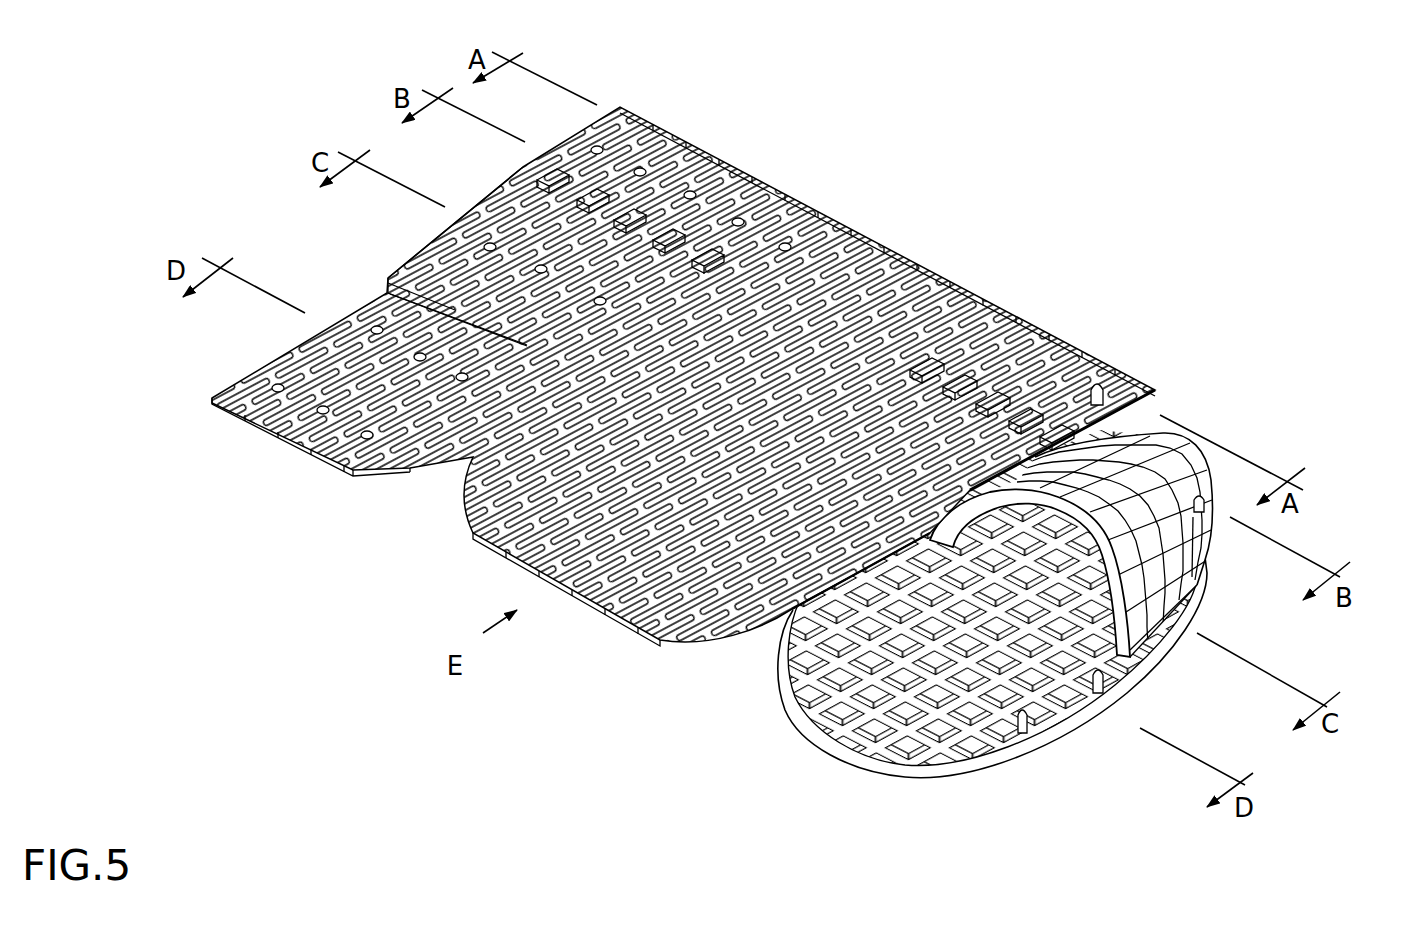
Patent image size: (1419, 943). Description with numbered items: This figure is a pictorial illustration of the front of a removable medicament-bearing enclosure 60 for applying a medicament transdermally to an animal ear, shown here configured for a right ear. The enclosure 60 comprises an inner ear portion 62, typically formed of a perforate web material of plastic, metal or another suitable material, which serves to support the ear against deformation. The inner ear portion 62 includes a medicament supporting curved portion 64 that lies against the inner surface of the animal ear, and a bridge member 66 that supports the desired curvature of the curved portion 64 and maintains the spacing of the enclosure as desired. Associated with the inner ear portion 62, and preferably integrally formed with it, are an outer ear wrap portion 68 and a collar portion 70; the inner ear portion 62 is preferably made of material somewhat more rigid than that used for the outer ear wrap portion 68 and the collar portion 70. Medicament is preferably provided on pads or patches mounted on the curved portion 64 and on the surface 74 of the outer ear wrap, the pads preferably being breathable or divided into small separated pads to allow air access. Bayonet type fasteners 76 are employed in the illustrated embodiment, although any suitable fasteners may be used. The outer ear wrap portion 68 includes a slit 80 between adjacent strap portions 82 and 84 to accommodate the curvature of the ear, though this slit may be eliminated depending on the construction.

The enclosure 60 is at (1302, 205).
The inner ear portion 62 is at (1148, 715).
The medicament supporting curved portion 64 is at (918, 783).
The bridge member 66 is at (1190, 562).
The outer ear wrap portion 68 is at (570, 742).
The collar portion 70 is at (882, 205).
The surface of outer ear wrap 74 is at (545, 585).
The bayonet type fasteners 76 is at (1105, 395).
The slit 80 is at (437, 307).
The strap portion 82 is at (453, 242).
The strap portion 84 is at (270, 368).